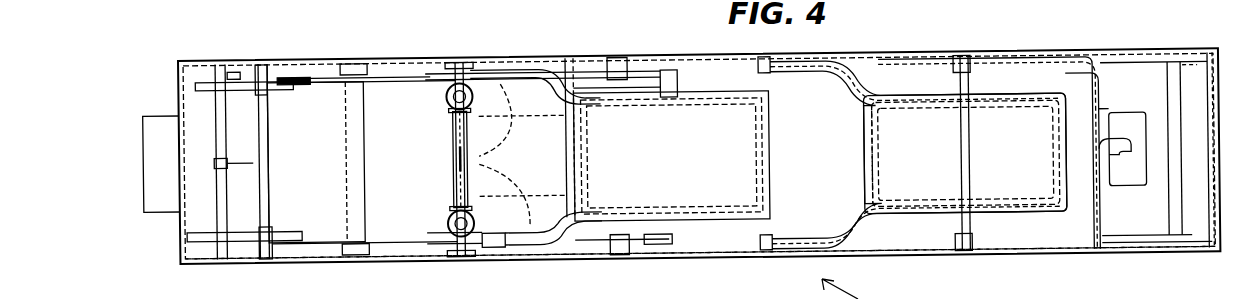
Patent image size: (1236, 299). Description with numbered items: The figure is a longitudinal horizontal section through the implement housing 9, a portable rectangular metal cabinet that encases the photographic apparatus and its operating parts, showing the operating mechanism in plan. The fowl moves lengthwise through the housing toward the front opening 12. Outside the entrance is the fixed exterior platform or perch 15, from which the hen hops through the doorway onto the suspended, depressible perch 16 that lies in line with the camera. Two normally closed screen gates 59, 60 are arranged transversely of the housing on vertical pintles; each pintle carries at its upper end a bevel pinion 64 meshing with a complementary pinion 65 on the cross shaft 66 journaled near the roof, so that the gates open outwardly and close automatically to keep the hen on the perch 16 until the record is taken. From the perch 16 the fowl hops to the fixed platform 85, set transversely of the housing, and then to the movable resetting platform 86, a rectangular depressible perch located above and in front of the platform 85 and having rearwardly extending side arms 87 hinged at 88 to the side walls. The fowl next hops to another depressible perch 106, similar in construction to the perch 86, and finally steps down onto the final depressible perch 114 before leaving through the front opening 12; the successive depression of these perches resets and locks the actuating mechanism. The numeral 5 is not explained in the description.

The casing 5 is at (621, 59).
The cabinet or housing 9 is at (416, 266).
The front opening 12 is at (1220, 190).
The fixed exterior platform or perch 15 is at (163, 197).
The suspended perch 16 is at (348, 195).
The screen gate 59 is at (460, 187).
The screen gate 60 is at (455, 139).
The bevel pinion 64 is at (447, 100).
The complementary pinion 65 is at (448, 113).
The cross shaft 66 is at (455, 163).
The fixed platform 85 is at (536, 142).
The movable resetting platform 86 is at (671, 156).
The side arms 87 is at (533, 252).
The hinge 88 is at (493, 251).
The depressible perch 106 is at (964, 153).
The final perch 114 is at (1133, 190).